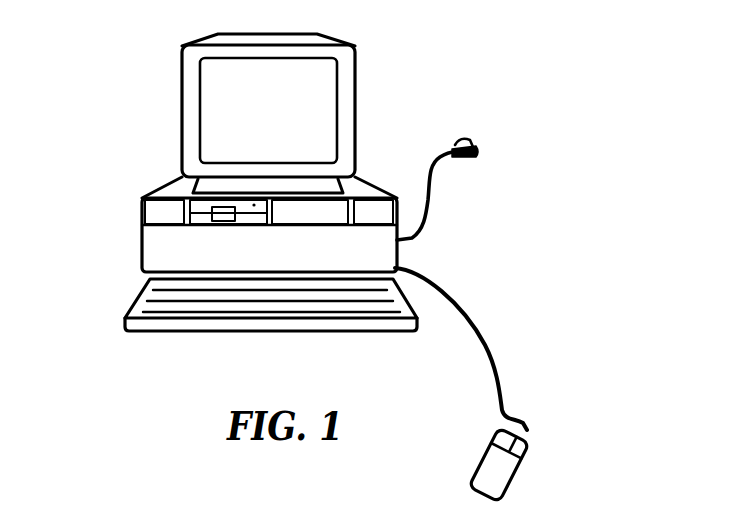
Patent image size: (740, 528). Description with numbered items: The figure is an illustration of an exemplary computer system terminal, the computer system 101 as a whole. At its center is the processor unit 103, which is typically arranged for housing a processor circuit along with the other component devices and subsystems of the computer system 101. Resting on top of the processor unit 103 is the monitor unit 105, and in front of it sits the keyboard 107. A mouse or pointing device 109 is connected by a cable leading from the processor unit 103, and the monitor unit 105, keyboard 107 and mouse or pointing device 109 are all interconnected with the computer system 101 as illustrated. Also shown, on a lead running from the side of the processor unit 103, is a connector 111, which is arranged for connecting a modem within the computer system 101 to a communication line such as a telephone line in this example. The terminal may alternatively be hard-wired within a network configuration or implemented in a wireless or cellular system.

The computer system 101 is at (580, 240).
The processor unit 103 is at (140, 208).
The monitor unit 105 is at (179, 132).
The keyboard 107 is at (123, 322).
The mouse or pointing device 109 is at (536, 447).
The connector 111 is at (463, 134).